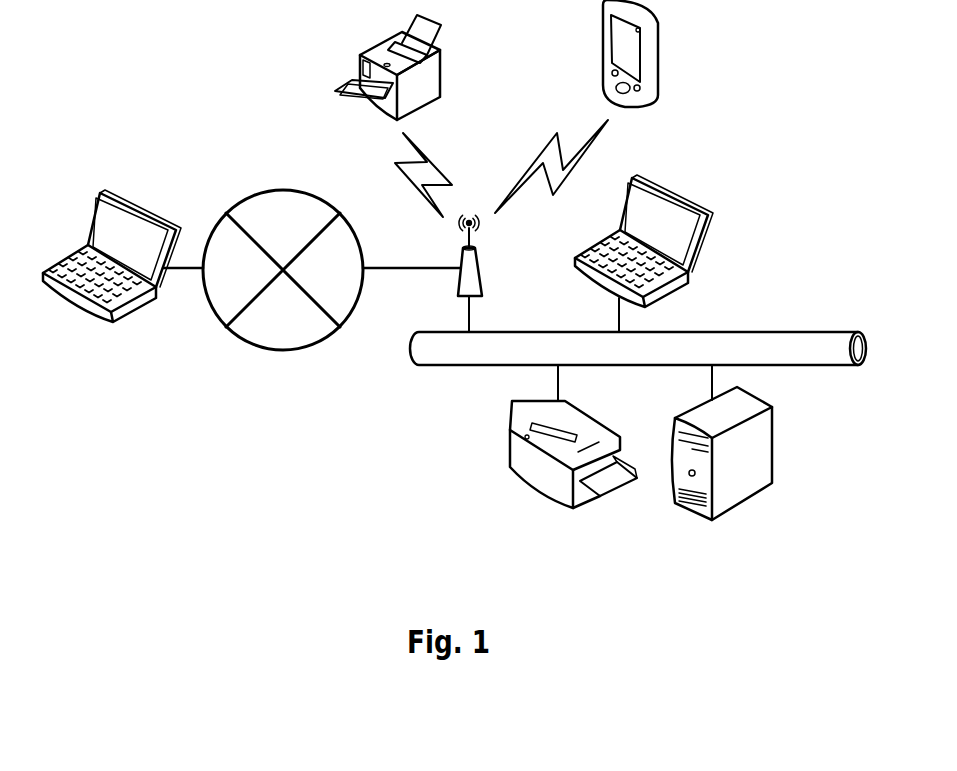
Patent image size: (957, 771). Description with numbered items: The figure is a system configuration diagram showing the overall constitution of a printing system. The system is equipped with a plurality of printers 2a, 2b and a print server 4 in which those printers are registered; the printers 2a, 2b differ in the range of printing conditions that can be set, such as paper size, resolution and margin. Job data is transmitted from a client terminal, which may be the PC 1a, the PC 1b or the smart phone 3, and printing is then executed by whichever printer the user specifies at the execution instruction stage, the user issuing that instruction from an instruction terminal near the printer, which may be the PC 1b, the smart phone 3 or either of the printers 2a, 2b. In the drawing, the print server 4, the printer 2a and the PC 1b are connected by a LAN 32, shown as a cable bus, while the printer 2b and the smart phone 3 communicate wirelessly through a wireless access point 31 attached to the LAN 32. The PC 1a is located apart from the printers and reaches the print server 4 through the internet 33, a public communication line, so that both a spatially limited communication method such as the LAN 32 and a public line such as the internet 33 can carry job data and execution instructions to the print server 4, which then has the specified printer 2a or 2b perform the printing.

The PC 1a is at (112, 193).
The PC 1b is at (670, 187).
The printer 2a is at (522, 489).
The printer 2b is at (442, 55).
The smart phone 3 is at (662, 58).
The print server 4 is at (693, 517).
The wireless access point 31 is at (480, 267).
The LAN 32 is at (470, 367).
The internet 33 is at (268, 350).